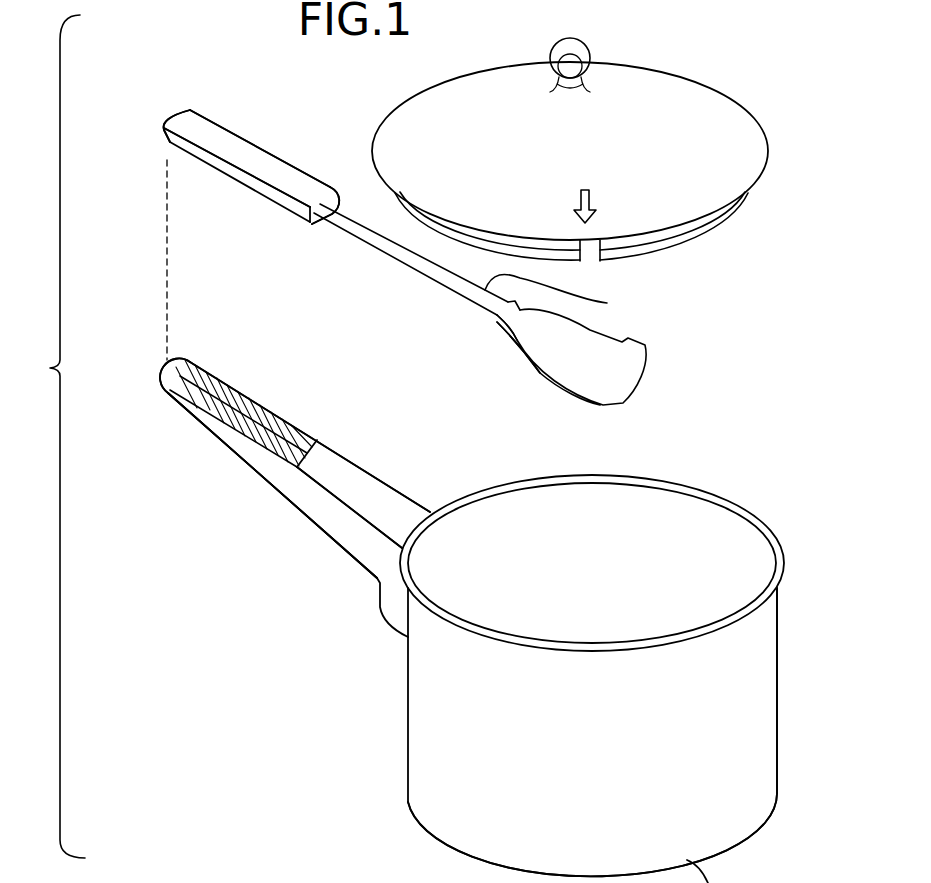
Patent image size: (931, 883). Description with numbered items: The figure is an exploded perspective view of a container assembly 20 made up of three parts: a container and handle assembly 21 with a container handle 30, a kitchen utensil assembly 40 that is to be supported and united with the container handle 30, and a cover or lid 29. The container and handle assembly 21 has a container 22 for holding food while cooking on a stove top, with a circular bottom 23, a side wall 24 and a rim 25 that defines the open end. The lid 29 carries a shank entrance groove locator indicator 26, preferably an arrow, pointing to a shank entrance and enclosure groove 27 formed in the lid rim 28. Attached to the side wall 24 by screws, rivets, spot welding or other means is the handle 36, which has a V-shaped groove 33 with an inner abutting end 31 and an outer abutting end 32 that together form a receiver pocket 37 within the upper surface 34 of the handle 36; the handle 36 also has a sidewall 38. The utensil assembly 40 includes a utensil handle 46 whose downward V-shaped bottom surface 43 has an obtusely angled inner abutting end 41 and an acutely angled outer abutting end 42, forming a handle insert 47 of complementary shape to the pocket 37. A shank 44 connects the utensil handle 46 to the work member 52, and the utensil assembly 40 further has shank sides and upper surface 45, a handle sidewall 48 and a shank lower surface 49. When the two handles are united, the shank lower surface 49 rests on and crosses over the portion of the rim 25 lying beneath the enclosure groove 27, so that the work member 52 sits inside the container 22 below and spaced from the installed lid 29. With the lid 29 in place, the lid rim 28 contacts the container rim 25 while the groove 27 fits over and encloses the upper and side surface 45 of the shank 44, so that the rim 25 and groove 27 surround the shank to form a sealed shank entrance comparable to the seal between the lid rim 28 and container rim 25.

The container assembly 20 is at (150, 306).
The container and handle assembly 21 is at (400, 706).
The container 22 is at (604, 770).
The circular bottom 23 is at (733, 882).
The side wall 24 is at (778, 690).
The rim 25 is at (760, 520).
The shank entrance groove locator indicator 26 is at (585, 190).
The shank entrance and enclosure groove 27 is at (596, 256).
The lid rim 28 is at (750, 188).
The lid 29 is at (718, 94).
The container handle 30 is at (278, 507).
The inner abutting end 31 is at (310, 453).
The outer abutting end 32 is at (168, 372).
The V-shaped groove 33 is at (287, 430).
The upper surface 34 is at (390, 513).
The handle 36 is at (226, 437).
The receiver pocket 37 is at (257, 416).
The sidewall 38 is at (340, 532).
The kitchen utensil assembly 40 is at (247, 198).
The obtusely angled inner abutting end 41 is at (331, 192).
The acutely angled outer abutting end 42 is at (166, 110).
The downward V-shaped bottom surface 43 is at (327, 226).
The shank 44 is at (452, 290).
The shank sides and upper surface 45 is at (560, 296).
The utensil handle 46 is at (297, 168).
The handle insert 47 is at (306, 224).
The handle sidewall 48 is at (228, 172).
The shank lower surface 49 is at (488, 310).
The work member 52 is at (628, 338).